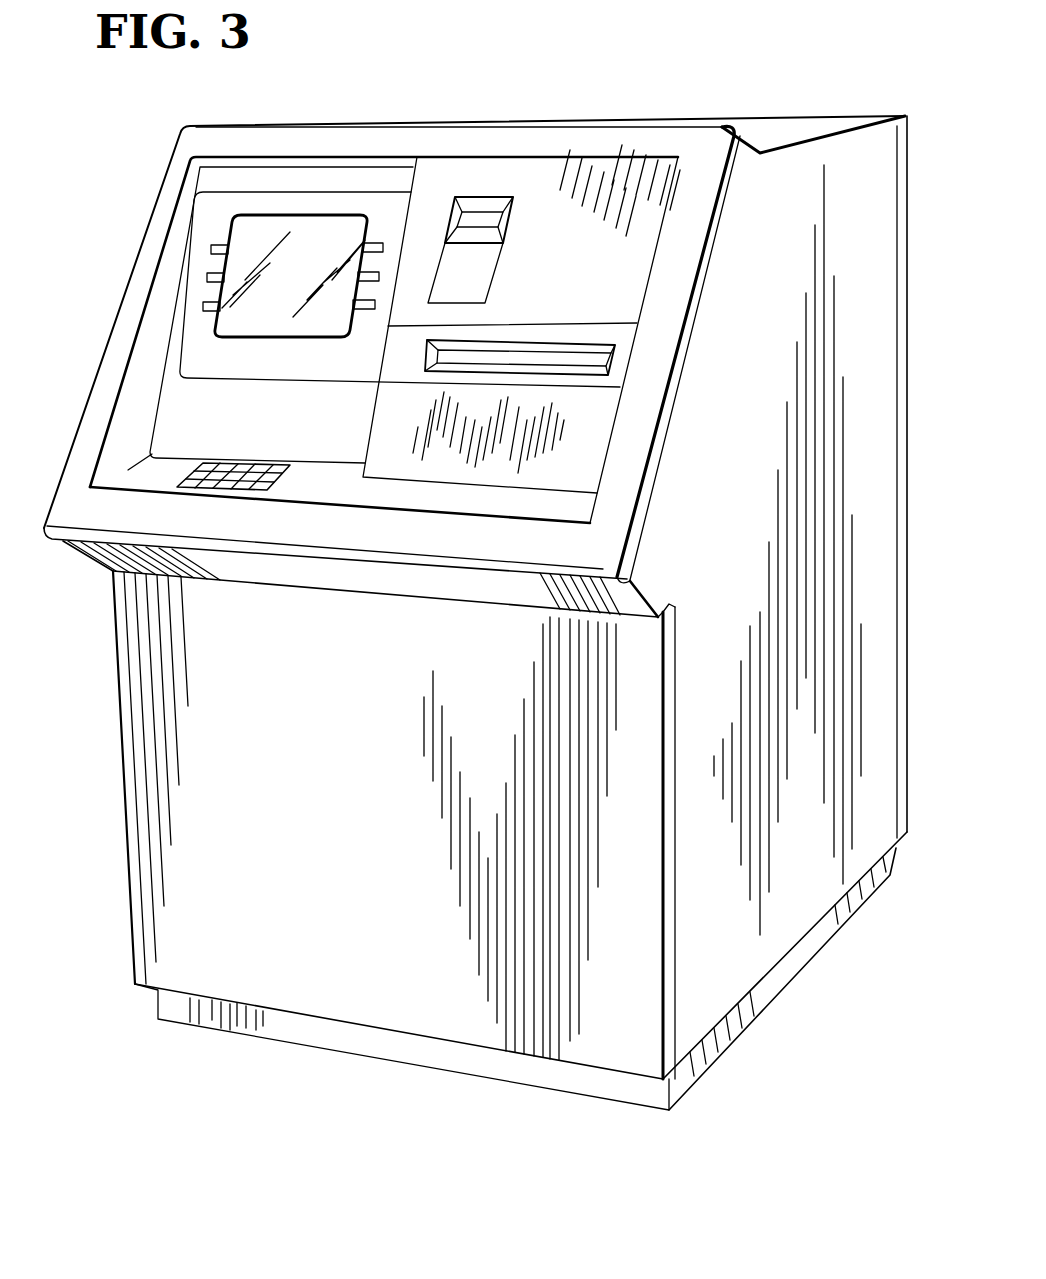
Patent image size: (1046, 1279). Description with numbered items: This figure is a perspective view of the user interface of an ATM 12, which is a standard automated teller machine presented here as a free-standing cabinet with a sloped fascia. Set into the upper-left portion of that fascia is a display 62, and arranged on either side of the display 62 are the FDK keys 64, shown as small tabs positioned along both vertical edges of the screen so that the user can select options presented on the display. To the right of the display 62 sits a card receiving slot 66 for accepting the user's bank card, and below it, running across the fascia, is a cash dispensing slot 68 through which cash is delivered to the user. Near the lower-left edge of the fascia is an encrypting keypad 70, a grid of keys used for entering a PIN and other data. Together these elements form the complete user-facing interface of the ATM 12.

The ATM 12 is at (865, 140).
The display 62 is at (310, 230).
The FDK keys 64 is at (203, 306).
The card receiving slot 66 is at (478, 215).
The cash dispensing slot 68 is at (602, 360).
The encrypting keypad 70 is at (195, 482).